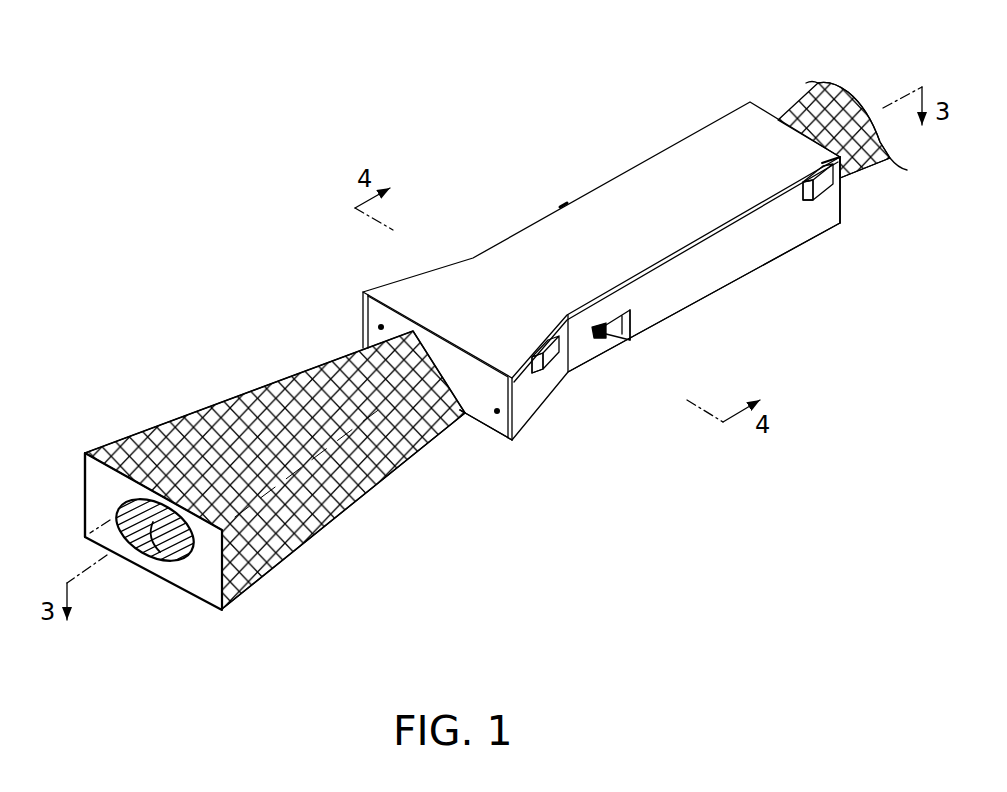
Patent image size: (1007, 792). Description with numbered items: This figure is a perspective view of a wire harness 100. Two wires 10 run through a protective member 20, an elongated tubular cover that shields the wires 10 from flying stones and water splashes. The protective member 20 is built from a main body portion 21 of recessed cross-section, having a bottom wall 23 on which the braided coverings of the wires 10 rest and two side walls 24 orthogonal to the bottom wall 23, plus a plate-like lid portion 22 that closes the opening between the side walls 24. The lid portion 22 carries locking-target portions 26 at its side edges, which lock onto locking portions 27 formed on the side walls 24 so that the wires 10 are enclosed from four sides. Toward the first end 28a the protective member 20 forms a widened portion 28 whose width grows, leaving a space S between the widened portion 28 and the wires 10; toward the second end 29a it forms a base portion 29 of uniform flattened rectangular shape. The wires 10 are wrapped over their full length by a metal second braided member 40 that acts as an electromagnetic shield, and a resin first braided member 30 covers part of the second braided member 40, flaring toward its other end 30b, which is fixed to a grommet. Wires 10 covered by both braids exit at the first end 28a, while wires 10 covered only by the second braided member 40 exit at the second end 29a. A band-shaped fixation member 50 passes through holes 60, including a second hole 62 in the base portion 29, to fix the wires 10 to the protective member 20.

The wire harness 100 is at (288, 267).
The wires 10 is at (83, 545).
The protective member 20 is at (601, 271).
The main body portion 21 is at (674, 316).
The lid portion 22 is at (493, 247).
The bottom wall 23 is at (465, 415).
The side walls 24 is at (783, 223).
The locking-target portions 26 is at (588, 193).
The locking portions 27 is at (803, 188).
The widened portion 28 is at (516, 416).
The first end 28a is at (495, 437).
The base portion 29 is at (728, 287).
The second end 29a is at (840, 210).
The first braided member 30 is at (237, 393).
The other end 30b is at (83, 478).
The second braided member 40 is at (196, 555).
The fixation member 50 is at (606, 337).
The holes 60 is at (656, 274).
The second hole 62 is at (622, 311).
The space S is at (378, 327).